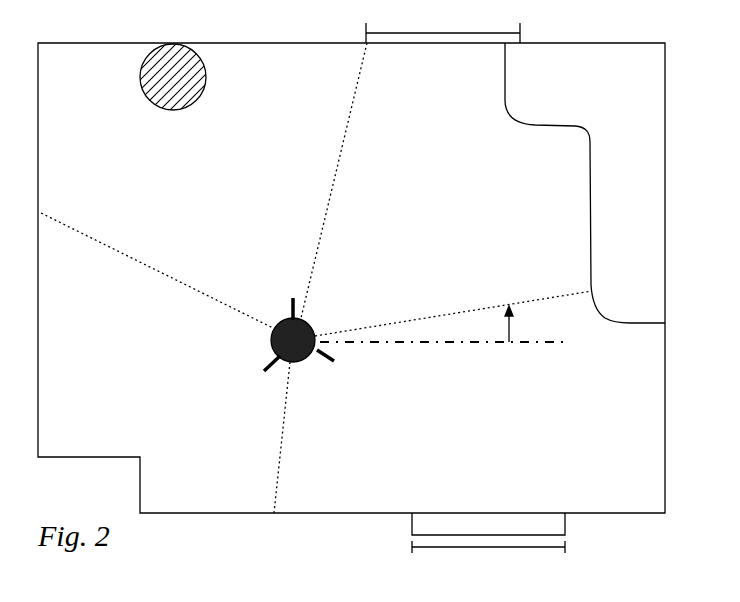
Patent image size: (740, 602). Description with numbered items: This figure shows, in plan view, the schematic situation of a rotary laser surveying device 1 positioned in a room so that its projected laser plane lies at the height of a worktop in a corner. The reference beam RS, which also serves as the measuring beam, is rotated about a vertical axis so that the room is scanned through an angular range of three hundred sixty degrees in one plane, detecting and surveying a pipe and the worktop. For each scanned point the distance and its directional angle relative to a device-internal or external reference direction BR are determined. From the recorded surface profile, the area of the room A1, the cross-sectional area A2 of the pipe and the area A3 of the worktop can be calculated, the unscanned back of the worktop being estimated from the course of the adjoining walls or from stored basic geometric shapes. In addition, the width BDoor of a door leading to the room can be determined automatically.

The device 1 is at (270, 343).
The area of the room A1 is at (580, 441).
The cross-sectional area of the pipe A2 is at (170, 57).
The area of the worktop A3 is at (626, 97).
The reference beam RS is at (333, 166).
The reference direction BR is at (457, 347).
The width of a door BDoor is at (503, 547).